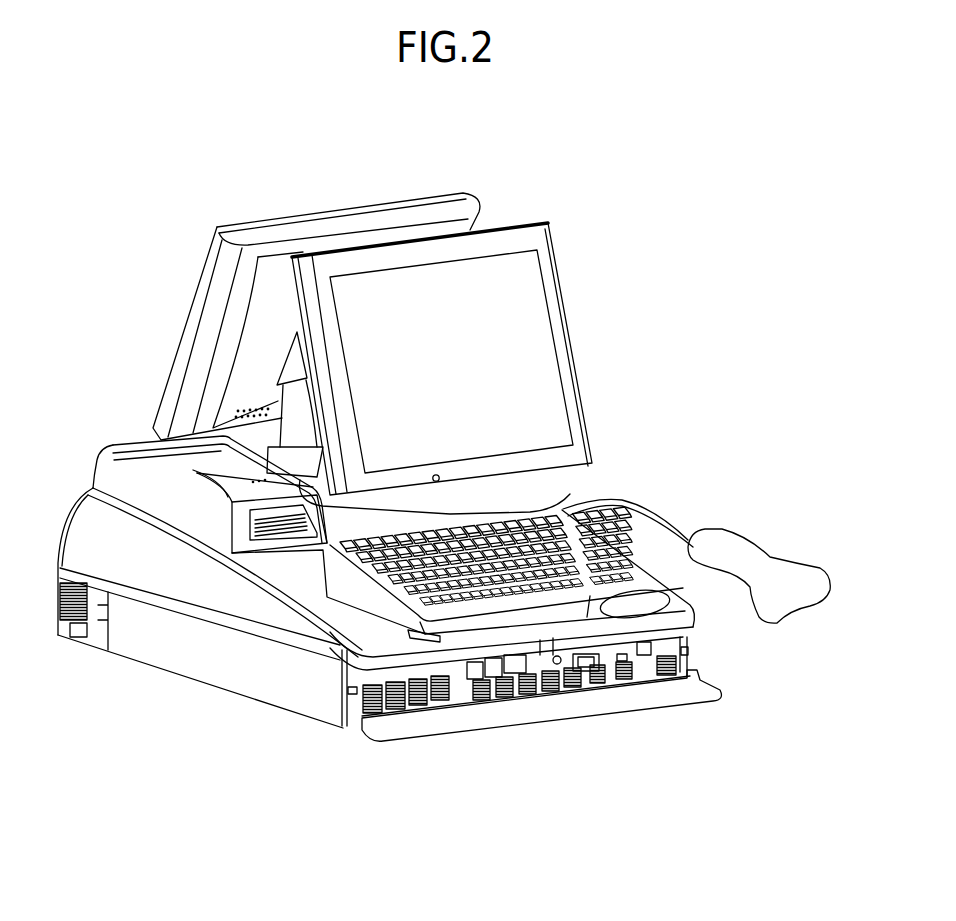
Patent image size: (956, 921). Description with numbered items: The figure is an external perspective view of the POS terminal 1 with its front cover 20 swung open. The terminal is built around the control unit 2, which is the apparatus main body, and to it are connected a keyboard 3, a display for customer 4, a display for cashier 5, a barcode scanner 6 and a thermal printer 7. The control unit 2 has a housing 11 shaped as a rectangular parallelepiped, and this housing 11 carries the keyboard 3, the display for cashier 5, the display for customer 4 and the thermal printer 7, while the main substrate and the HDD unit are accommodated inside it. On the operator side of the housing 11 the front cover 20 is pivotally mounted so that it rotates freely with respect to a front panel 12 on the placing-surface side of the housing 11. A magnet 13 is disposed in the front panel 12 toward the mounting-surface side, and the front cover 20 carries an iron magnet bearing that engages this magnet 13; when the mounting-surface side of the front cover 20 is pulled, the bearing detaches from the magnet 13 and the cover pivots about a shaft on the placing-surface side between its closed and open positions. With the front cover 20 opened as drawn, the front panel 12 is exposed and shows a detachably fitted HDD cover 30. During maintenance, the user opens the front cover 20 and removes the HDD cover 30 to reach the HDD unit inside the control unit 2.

The POS terminal 1 is at (653, 180).
The control unit 2 is at (150, 650).
The keyboard 3 is at (607, 568).
The display for customer 4 is at (193, 300).
The display for cashier 5 is at (537, 356).
The barcode scanner 6 is at (750, 543).
The thermal printer 7 is at (163, 447).
The housing 11 is at (273, 692).
The front panel 12 is at (614, 658).
The magnet 13 is at (352, 692).
The front cover 20 is at (410, 737).
The HDD cover 30 is at (516, 701).